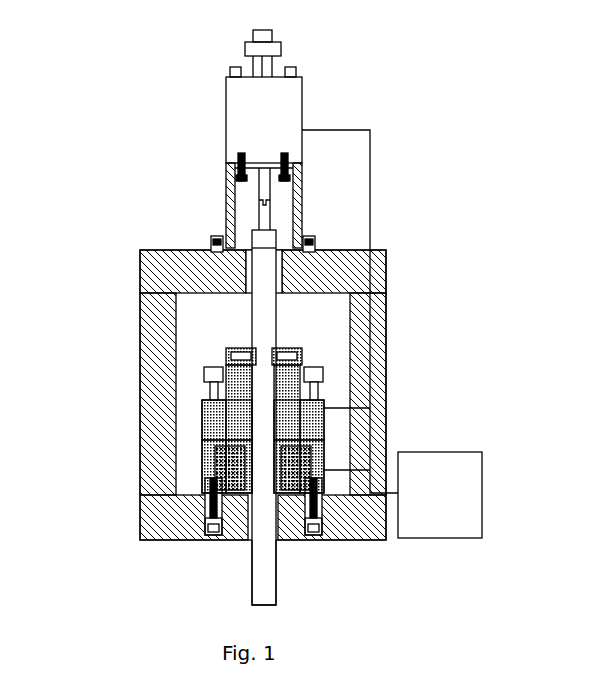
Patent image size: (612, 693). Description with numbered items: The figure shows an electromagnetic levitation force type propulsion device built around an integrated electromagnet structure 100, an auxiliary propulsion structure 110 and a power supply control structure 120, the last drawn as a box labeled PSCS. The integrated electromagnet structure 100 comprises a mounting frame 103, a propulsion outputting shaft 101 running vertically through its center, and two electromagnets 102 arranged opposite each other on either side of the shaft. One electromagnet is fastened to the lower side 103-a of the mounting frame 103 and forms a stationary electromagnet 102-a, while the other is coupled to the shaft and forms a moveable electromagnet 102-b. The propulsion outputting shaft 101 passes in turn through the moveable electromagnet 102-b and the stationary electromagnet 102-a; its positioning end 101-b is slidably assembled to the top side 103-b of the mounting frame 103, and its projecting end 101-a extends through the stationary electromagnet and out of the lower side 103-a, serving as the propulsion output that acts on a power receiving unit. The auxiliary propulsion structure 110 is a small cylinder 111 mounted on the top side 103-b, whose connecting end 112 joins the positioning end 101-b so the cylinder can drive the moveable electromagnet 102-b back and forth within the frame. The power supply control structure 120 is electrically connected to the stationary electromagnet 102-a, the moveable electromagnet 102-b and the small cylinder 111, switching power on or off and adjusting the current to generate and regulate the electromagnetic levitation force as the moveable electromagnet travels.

The integrated electromagnet structure 100 is at (167, 539).
The propulsion outputting shaft 101 is at (255, 316).
The projecting end 101-a is at (263, 556).
The positioning end 101-b is at (263, 187).
The electromagnets 102 is at (320, 445).
The stationary electromagnet 102-a is at (207, 458).
The moveable electromagnet 102-b is at (210, 417).
The mounting frame 103 is at (155, 290).
The lower side of the mounting frame 103-a is at (205, 501).
The top side of the mounting frame 103-b is at (216, 251).
The auxiliary propulsion structure 110 is at (302, 120).
The small cylinder 111 is at (262, 105).
The connecting end 112 is at (300, 168).
The power supply control structure 120 is at (398, 452).